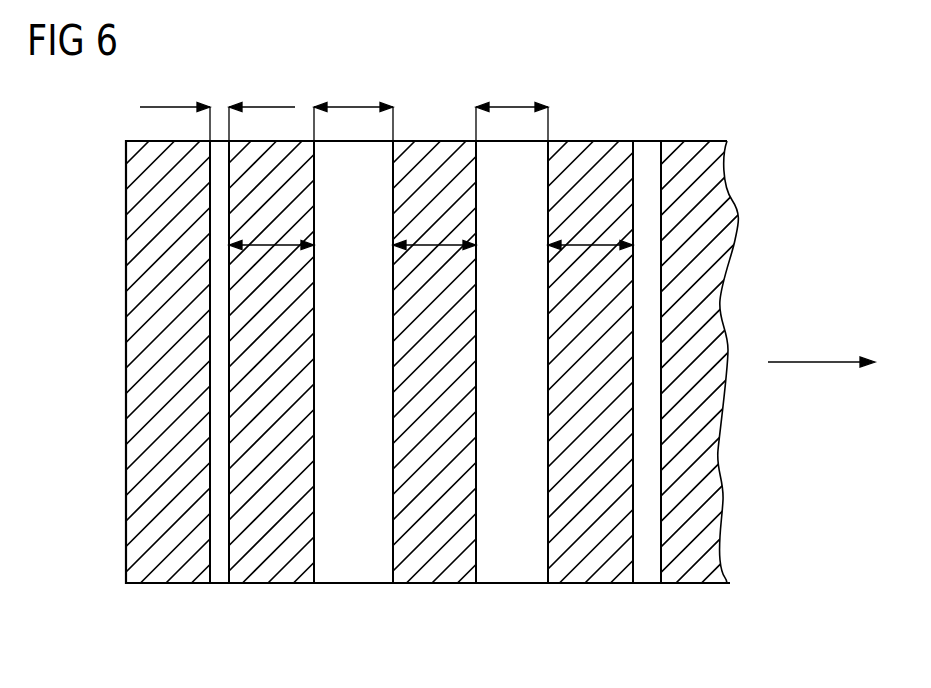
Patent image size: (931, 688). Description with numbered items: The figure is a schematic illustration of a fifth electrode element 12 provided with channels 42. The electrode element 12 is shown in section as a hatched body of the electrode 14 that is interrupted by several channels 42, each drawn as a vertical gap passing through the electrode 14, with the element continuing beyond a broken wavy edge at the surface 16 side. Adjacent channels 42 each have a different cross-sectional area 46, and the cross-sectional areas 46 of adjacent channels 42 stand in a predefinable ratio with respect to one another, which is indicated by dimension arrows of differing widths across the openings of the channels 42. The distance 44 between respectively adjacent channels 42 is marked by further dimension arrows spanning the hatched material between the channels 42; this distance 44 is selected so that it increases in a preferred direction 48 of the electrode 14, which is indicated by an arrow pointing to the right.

The electrode element 12 is at (701, 91).
The electrode 14 is at (433, 572).
The surface 16 is at (713, 122).
The channels 42 is at (220, 572).
The distance 44 is at (271, 245).
The cross-sectional area 46 is at (219, 107).
The preferred direction 48 is at (822, 362).